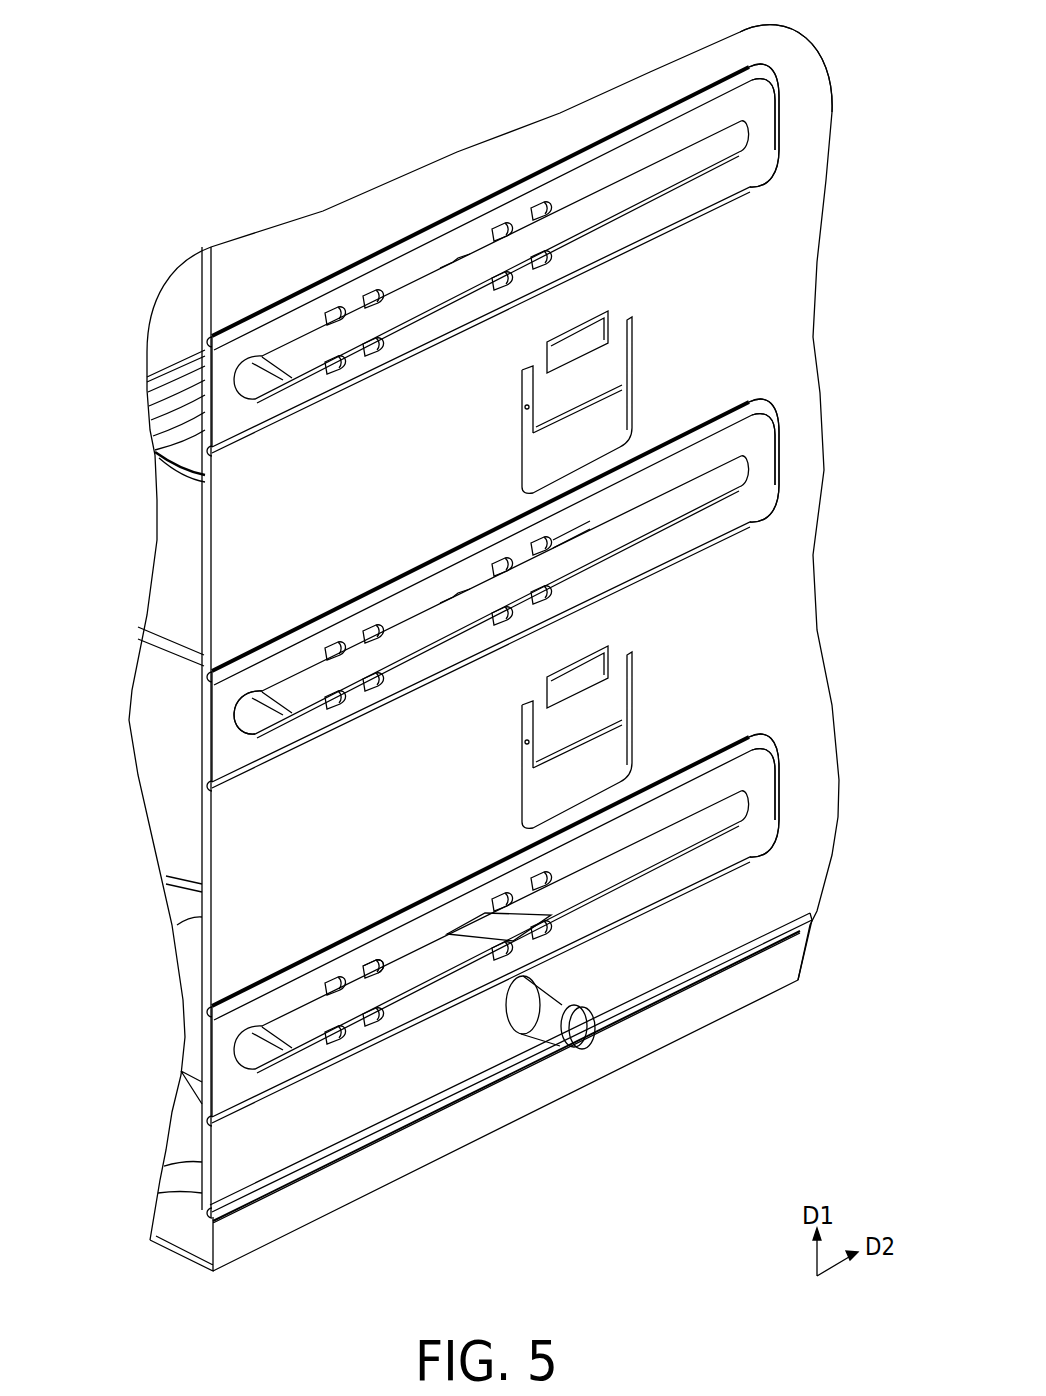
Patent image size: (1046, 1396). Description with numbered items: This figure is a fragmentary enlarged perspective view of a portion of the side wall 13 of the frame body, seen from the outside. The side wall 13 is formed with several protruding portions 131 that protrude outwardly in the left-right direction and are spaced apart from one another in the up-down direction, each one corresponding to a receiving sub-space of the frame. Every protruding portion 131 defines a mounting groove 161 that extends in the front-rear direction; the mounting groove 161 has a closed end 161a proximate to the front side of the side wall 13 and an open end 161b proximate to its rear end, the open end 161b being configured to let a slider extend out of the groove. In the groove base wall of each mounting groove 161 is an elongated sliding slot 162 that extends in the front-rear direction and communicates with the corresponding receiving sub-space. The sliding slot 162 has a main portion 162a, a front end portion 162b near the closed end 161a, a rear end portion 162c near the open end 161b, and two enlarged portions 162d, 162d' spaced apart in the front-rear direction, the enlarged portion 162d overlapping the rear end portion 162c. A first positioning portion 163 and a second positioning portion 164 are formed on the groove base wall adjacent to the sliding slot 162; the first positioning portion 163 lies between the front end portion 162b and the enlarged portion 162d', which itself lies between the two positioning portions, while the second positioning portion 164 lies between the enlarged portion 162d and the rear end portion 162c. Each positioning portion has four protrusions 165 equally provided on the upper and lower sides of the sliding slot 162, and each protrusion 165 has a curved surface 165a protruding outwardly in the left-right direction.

The side wall 13 is at (283, 1150).
The protruding portion 131 is at (727, 752).
The mounting groove 161 is at (205, 729).
The closed end 161a is at (759, 112).
The open end 161b is at (200, 392).
The sliding slot 162 is at (723, 582).
The main portion 162a is at (567, 587).
The front end portion 162b is at (857, 451).
The rear end portion 162c is at (204, 785).
The enlarged portion 162d is at (243, 661).
The enlarged portion 162d' is at (437, 360).
The first positioning portion 163 is at (523, 214).
The second positioning portion 164 is at (358, 300).
The protrusion 165 is at (372, 960).
The curved surface 165a is at (377, 969).